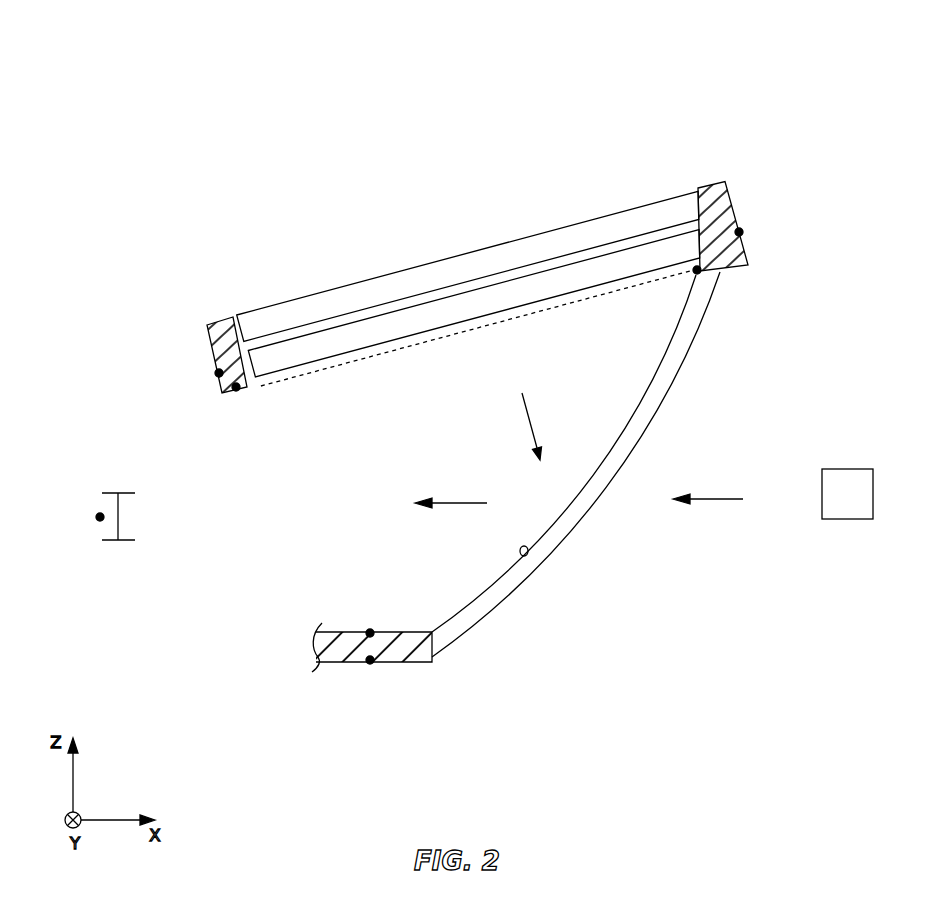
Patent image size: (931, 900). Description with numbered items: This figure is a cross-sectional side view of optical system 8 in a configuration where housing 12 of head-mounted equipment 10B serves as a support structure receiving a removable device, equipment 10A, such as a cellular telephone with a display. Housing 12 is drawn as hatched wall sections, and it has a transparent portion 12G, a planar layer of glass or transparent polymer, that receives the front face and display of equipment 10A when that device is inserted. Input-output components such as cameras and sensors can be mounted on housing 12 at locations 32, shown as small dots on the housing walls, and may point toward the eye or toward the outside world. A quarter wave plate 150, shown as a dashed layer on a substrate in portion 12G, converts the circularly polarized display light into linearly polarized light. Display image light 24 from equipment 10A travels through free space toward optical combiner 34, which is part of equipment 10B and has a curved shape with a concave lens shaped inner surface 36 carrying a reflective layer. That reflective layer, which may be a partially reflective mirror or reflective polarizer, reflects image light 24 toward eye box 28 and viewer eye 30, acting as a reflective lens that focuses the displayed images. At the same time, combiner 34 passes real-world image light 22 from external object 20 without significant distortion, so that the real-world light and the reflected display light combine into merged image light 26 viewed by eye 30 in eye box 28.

The optical system 8 is at (757, 68).
The equipment 10A is at (280, 313).
The equipment 10B is at (635, 475).
The housing 12 is at (206, 338).
The transparent portion 12G is at (295, 364).
The quarter wave plate 150 is at (365, 366).
The locations 32 is at (219, 377).
The optical combiner 34 is at (477, 614).
The concave lens shaped surface 36 is at (525, 560).
The image light 24 is at (530, 418).
The merged image light 26 is at (455, 509).
The real-world image light 22 is at (713, 503).
The real-world object 20 is at (847, 522).
The eye box 28 is at (110, 490).
The viewer eye 30 is at (100, 524).